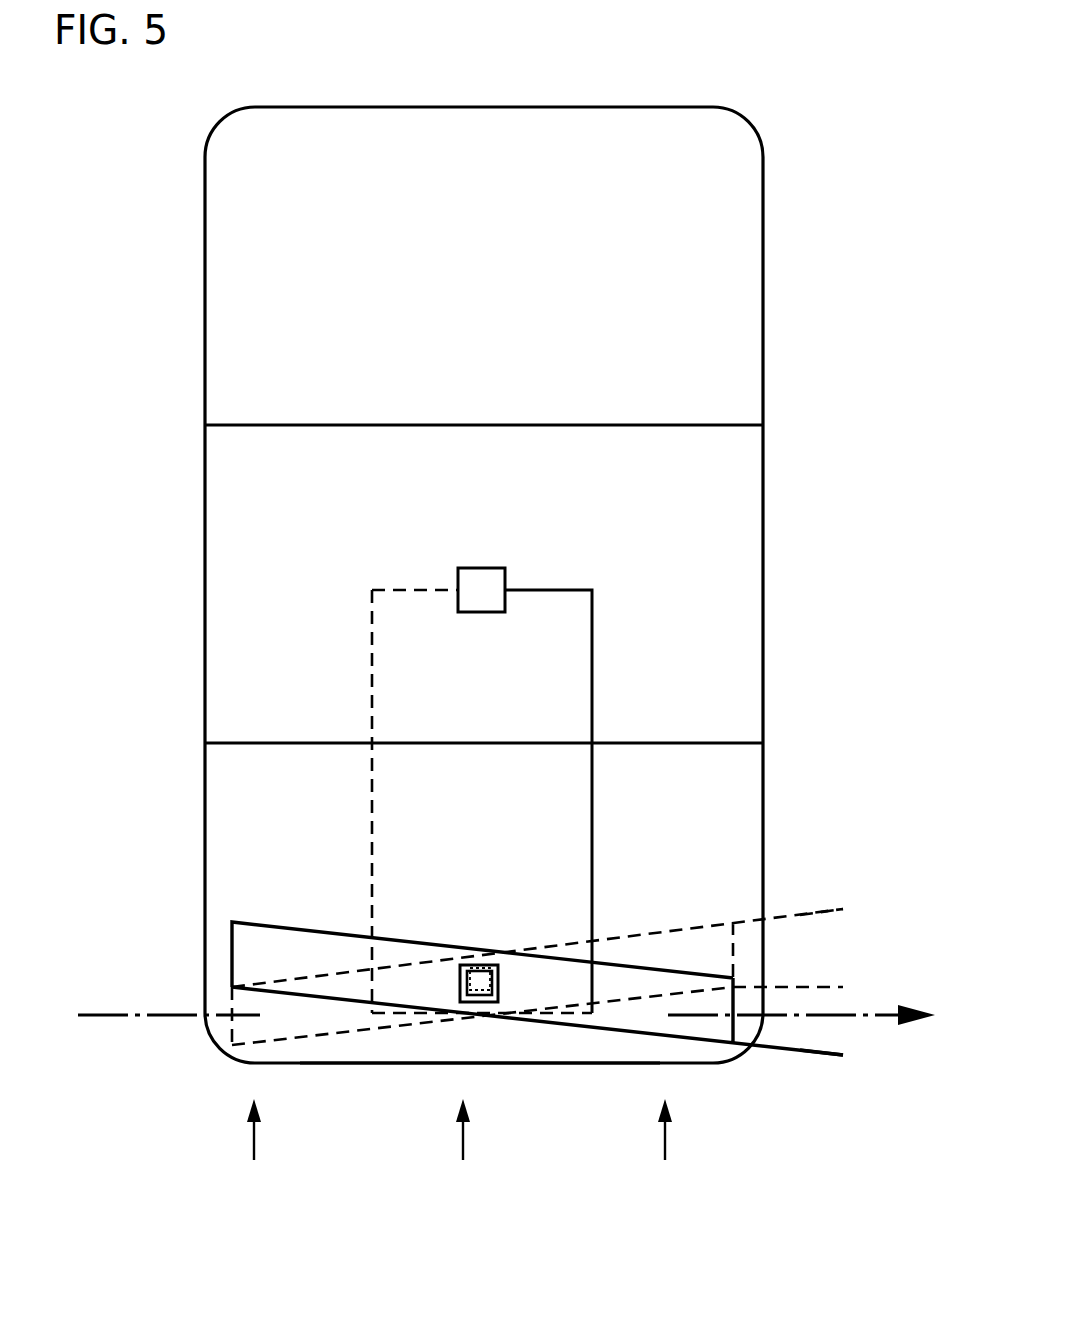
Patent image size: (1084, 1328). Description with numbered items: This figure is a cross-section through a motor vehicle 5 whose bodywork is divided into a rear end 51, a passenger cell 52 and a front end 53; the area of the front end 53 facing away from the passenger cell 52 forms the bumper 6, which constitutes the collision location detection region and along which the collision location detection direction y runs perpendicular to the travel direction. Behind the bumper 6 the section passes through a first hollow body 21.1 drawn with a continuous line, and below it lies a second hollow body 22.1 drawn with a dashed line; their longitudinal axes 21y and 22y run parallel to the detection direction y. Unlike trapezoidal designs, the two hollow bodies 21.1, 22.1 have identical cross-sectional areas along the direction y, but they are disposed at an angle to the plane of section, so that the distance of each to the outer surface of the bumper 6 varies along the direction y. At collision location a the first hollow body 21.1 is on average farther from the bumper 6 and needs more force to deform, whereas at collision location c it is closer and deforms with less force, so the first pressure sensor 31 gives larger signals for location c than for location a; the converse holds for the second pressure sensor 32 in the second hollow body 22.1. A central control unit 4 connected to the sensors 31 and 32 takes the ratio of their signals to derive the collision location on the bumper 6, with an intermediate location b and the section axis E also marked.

The motor vehicle 5 is at (695, 84).
The rear end 51 is at (752, 277).
The passenger cell 52 is at (752, 590).
The front end 53 is at (752, 820).
The central control unit 4 is at (483, 578).
The first pressure sensor 31 is at (484, 975).
The second pressure sensor 32 is at (476, 978).
The first hollow body 21.1 is at (603, 1036).
The longitudinal axis of the first hollow body 21y is at (793, 1052).
The second hollow body 22.1 is at (300, 1040).
The longitudinal axis of the second hollow body 22y is at (843, 908).
The bumper 6 is at (505, 1065).
The axis E is at (505, 1017).
The collision location detection direction y is at (848, 1013).
The collision location a is at (254, 1152).
The position b is at (463, 1152).
The collision location c is at (664, 1152).